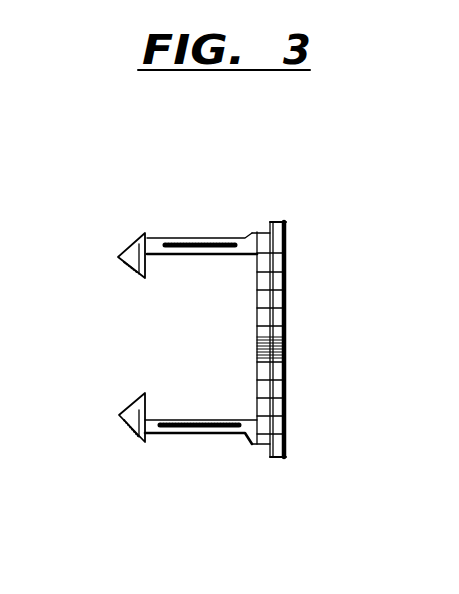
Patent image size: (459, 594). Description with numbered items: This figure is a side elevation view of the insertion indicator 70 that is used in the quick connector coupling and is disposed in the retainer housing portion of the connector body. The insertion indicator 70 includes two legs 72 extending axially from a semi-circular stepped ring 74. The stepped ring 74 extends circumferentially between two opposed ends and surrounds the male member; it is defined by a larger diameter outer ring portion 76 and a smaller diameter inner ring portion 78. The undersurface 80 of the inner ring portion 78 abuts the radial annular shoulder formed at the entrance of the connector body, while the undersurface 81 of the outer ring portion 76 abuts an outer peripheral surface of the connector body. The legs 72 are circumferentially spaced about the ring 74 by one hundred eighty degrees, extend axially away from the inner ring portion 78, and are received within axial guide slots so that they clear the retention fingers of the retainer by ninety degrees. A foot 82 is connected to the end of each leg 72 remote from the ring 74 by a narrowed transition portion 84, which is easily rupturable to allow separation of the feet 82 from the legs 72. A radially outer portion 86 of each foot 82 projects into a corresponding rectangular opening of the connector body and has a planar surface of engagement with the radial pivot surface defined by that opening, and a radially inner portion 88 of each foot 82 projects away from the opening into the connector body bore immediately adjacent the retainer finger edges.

The insertion indicator 70 is at (325, 169).
The legs 72 is at (197, 434).
The semi-circular stepped ring 74 is at (273, 458).
The outer ring portion 76 is at (287, 398).
The inner ring portion 78 is at (257, 330).
The undersurface of inner ring portion 80 is at (257, 270).
The undersurface of outer ring portion 81 is at (268, 222).
The foot 82 is at (120, 256).
The narrowed transition portion 84 is at (150, 240).
The radially outer portion of foot 86 is at (137, 238).
The radially inner portion of foot 88 is at (132, 272).